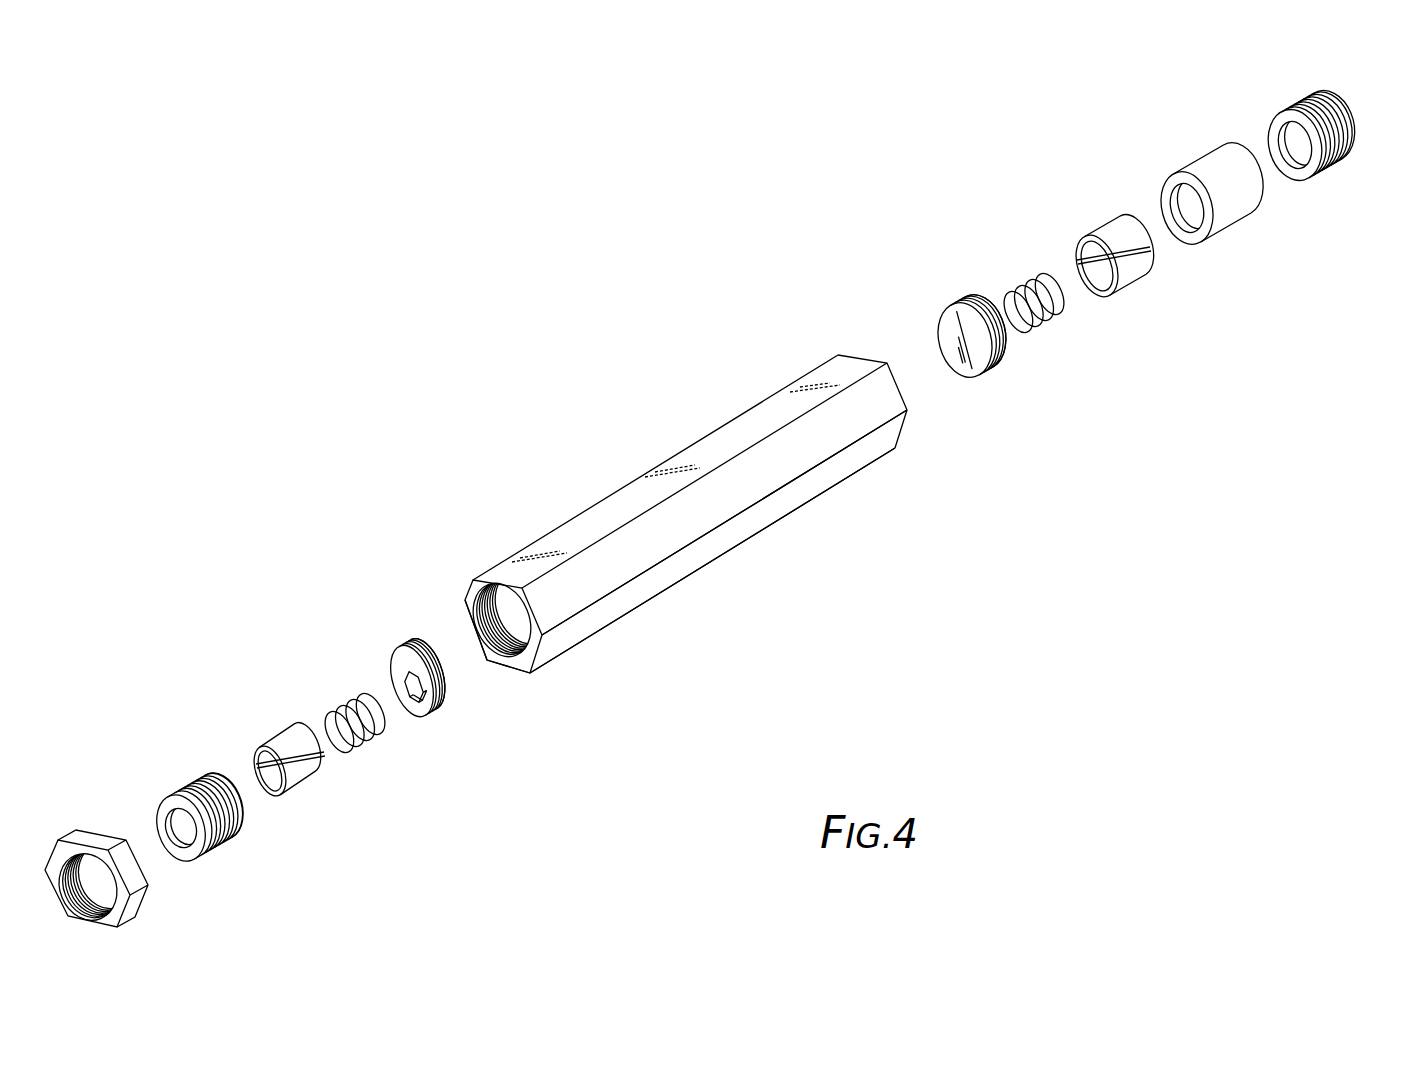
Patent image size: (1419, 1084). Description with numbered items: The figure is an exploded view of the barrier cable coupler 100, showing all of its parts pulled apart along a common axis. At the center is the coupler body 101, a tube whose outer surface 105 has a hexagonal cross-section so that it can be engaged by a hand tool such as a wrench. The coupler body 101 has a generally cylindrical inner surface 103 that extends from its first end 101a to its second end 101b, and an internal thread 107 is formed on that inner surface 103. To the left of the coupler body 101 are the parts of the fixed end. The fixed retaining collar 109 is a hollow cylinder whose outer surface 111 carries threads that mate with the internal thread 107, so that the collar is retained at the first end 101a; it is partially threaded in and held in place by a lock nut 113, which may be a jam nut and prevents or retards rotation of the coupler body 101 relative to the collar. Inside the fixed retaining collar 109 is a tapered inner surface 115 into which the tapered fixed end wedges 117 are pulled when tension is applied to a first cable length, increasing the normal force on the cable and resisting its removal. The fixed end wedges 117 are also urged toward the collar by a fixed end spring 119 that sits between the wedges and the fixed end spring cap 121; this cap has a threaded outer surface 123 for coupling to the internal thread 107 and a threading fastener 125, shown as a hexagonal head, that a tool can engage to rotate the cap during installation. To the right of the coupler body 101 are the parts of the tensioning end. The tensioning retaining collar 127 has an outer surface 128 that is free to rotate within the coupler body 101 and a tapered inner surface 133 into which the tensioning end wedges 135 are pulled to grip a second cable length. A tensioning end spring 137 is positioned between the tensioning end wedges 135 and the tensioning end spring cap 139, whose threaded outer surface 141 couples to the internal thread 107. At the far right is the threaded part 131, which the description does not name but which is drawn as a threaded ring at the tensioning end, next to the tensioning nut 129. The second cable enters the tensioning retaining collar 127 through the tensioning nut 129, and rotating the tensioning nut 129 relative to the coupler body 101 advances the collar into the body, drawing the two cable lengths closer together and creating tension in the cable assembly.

The barrier cable coupler 100 is at (440, 373).
The coupler body 101 is at (618, 490).
The first end 101a is at (543, 692).
The second end 101b is at (892, 473).
The inner surface 103 is at (480, 660).
The outer surface 105 is at (697, 522).
The internal thread 107 is at (465, 607).
The fixed retaining collar 109 is at (185, 777).
The outer surface 111 is at (242, 842).
The lock nut 113 is at (67, 830).
The tapered inner surface 115 is at (187, 835).
The fixed end wedges 117 is at (320, 777).
The fixed end spring 119 is at (345, 710).
The fixed end spring cap 121 is at (398, 657).
The threaded outer surface 123 is at (450, 708).
The threading fastener 125 is at (407, 703).
The tensioning retaining collar 127 is at (1160, 163).
The outer surface 128 is at (1245, 223).
The tensioning nut 129 is at (1307, 185).
The threaded plug 131 is at (1290, 103).
The tapered inner surface 133 is at (1192, 215).
The tensioning end wedges 135 is at (1150, 258).
The tensioning end spring 137 is at (1030, 290).
The tensioning end spring cap 139 is at (940, 328).
The threaded outer surface 141 is at (997, 370).